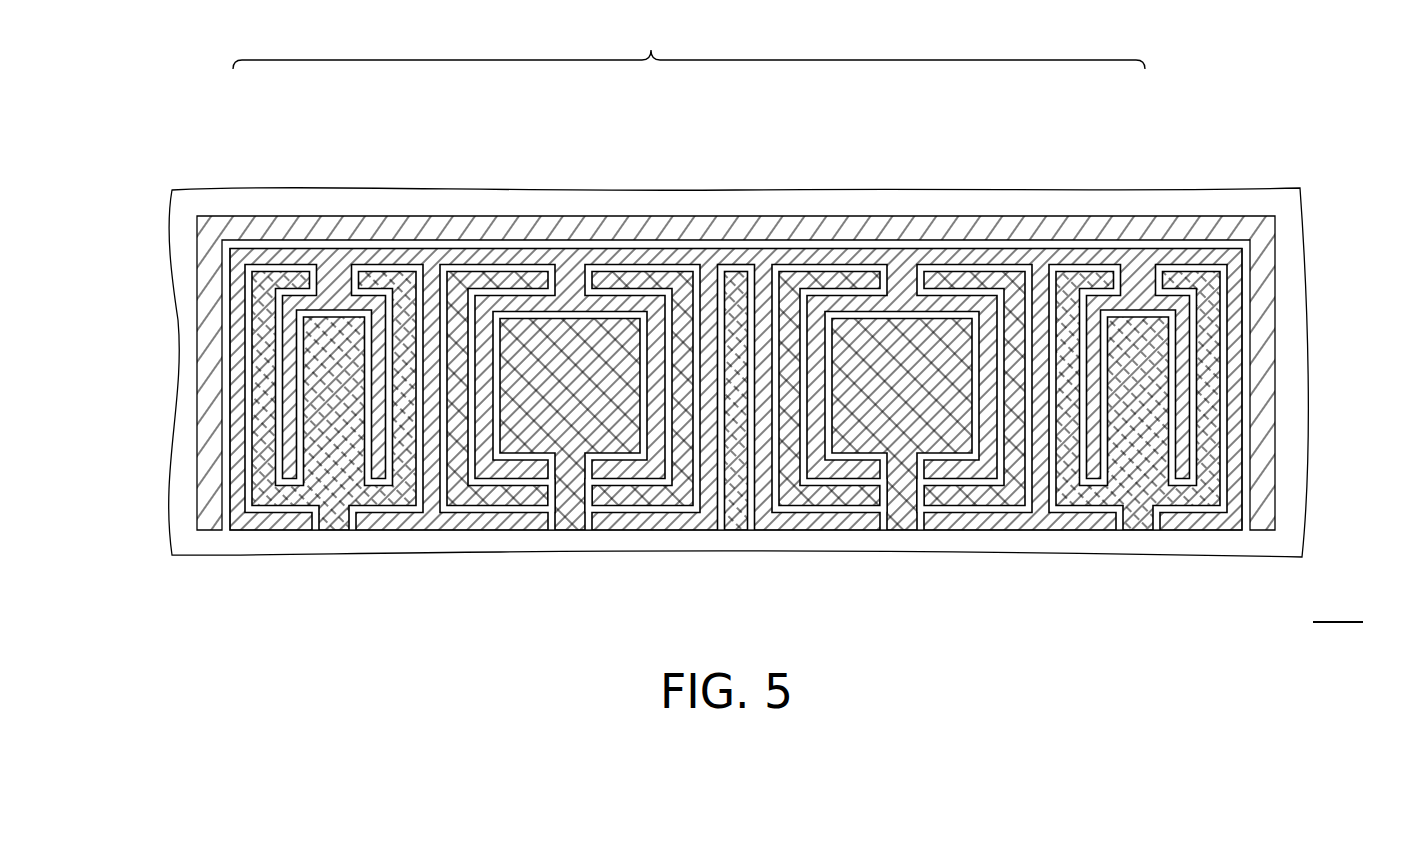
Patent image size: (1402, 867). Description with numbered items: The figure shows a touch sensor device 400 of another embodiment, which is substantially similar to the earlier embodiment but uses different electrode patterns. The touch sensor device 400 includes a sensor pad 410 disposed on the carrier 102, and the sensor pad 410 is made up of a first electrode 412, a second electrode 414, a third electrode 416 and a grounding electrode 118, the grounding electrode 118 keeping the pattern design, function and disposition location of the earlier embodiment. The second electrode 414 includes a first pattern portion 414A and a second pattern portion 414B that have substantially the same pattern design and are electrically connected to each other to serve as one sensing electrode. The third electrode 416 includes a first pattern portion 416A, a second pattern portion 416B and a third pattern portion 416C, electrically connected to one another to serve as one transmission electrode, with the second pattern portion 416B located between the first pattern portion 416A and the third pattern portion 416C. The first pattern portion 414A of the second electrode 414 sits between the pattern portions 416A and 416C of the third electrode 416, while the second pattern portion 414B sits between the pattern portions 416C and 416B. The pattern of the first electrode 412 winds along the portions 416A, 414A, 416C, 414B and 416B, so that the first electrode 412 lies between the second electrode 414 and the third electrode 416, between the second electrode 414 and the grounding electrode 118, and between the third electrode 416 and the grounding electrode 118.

The carrier 102 is at (1296, 473).
The grounding electrode 118 is at (262, 228).
The touch sensor device 400 is at (1338, 603).
The sensor pad 410 is at (689, 39).
The first electrode 412 is at (570, 277).
The second electrode 414 is at (736, 307).
The first pattern portion 414A is at (620, 273).
The second pattern portion 414B is at (823, 278).
The third electrode 416 is at (736, 307).
The first pattern portion 416A is at (337, 337).
The second pattern portion 416B is at (1140, 345).
The third pattern portion 416C is at (736, 285).